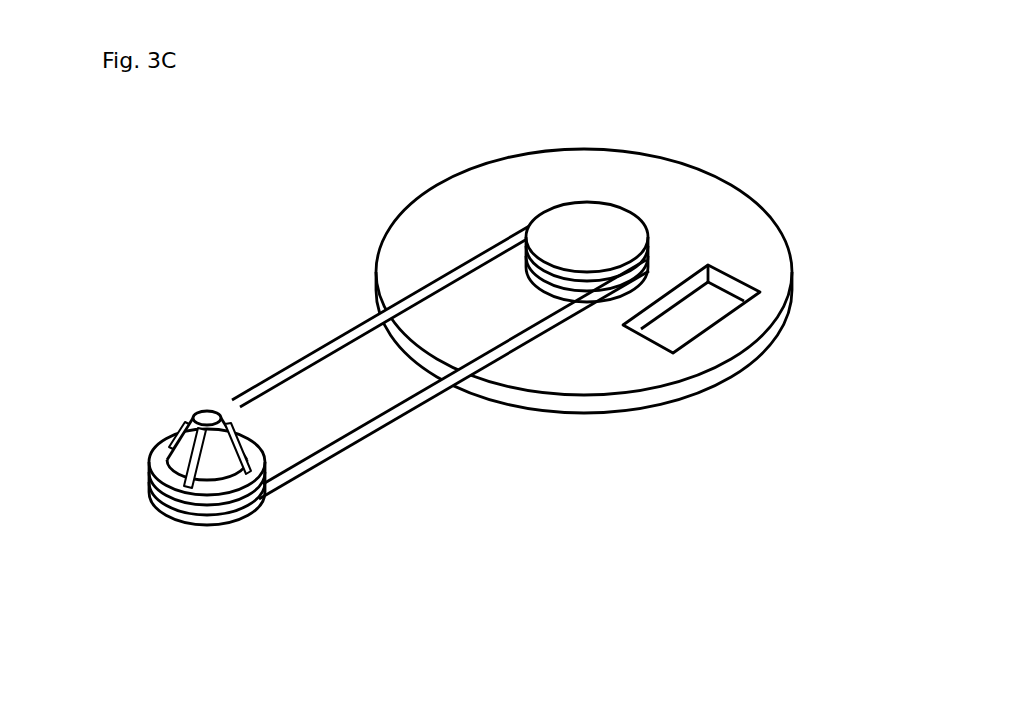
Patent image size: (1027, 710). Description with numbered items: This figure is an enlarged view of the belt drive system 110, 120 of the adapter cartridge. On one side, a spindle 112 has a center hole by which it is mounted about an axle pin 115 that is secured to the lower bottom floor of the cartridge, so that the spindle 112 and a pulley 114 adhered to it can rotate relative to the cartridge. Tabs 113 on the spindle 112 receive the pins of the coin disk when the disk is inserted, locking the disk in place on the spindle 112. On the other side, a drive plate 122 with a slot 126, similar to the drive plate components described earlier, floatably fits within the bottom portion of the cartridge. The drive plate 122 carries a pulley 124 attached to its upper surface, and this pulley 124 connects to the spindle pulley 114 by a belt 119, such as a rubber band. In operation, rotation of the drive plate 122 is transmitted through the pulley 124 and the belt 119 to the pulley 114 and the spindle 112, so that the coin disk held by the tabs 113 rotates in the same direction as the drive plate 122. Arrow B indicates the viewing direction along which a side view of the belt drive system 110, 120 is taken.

The belt drive system 110 is at (108, 430).
The spindle 112 is at (168, 350).
The tabs 113 is at (152, 490).
The pulley 114 is at (235, 522).
The axle pin 115 is at (208, 418).
The belt 119 is at (362, 442).
The belt drive system 120 is at (822, 250).
The drive plate 122 is at (640, 152).
The pulley 124 is at (570, 203).
The slot 126 is at (727, 293).
The arrow B is at (547, 439).